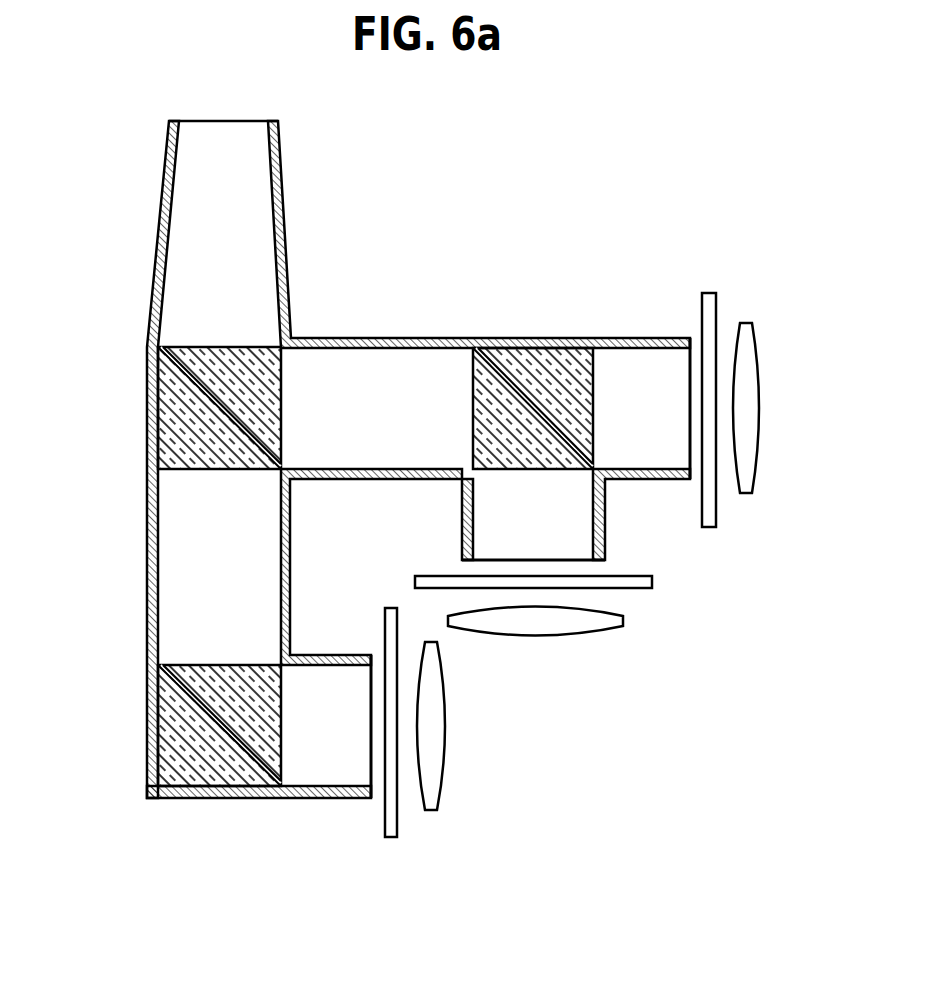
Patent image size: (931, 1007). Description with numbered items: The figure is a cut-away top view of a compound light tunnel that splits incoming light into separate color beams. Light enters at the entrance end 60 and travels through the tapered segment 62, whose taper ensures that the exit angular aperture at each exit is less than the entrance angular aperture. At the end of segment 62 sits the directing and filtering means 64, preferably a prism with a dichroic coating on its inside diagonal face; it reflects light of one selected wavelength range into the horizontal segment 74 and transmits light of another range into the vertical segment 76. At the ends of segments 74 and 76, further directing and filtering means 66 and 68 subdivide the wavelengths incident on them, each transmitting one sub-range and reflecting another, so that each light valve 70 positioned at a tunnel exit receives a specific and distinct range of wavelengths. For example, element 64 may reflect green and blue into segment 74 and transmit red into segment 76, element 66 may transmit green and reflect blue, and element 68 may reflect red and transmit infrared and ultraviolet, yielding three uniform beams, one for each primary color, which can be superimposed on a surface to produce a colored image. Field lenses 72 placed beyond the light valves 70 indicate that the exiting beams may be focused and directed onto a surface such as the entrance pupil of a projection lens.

The entrance end 60 is at (218, 120).
The tapered segment 62 is at (262, 200).
The directing and filtering means 64 is at (126, 407).
The directing and filtering means 66 is at (540, 316).
The directing and filtering means 68 is at (123, 736).
The light valve 70 is at (708, 527).
The field lens 72 is at (753, 467).
The tunnel segment 74 is at (348, 355).
The tunnel segment 76 is at (167, 547).